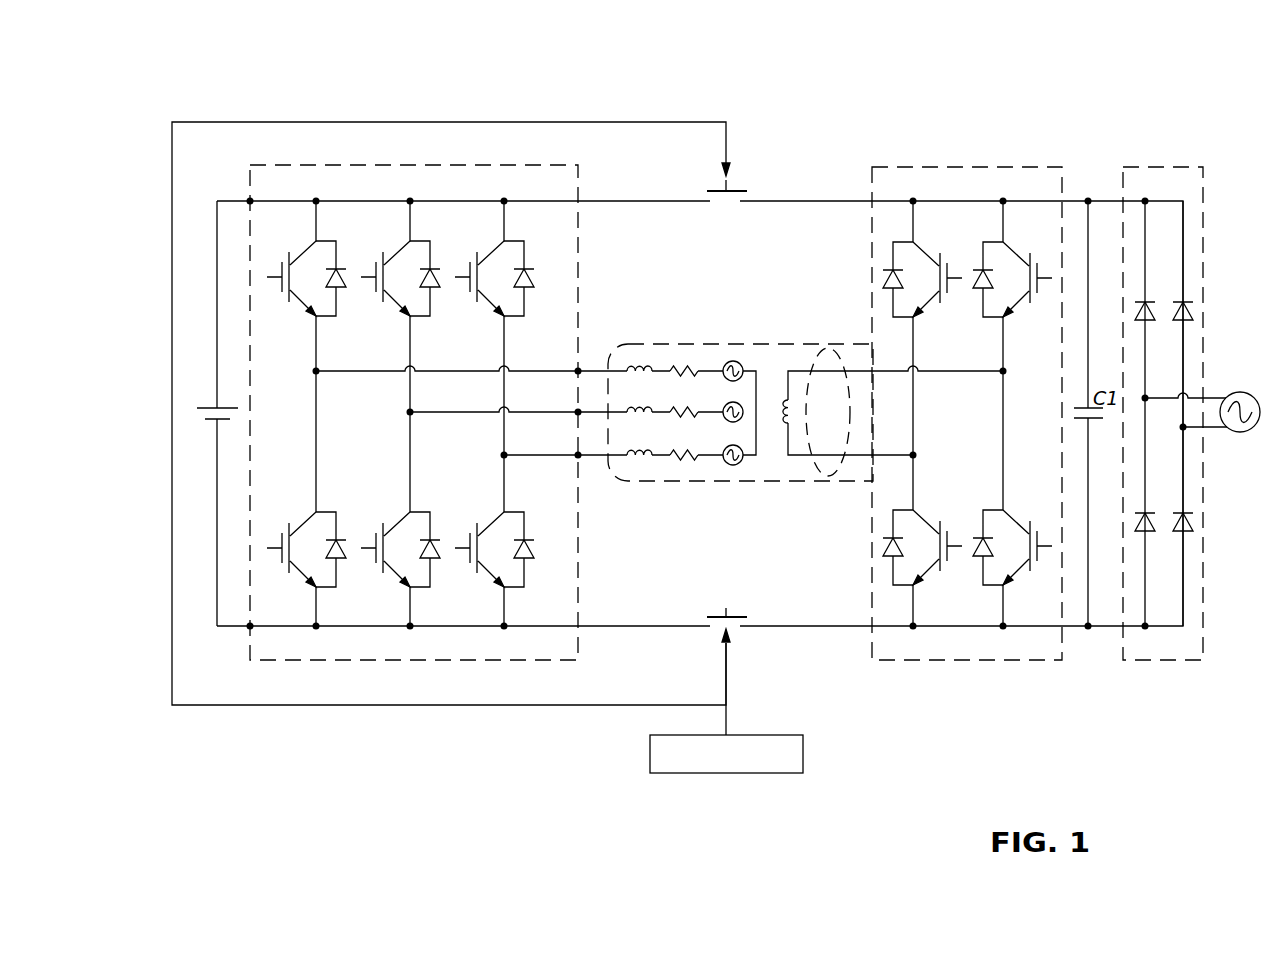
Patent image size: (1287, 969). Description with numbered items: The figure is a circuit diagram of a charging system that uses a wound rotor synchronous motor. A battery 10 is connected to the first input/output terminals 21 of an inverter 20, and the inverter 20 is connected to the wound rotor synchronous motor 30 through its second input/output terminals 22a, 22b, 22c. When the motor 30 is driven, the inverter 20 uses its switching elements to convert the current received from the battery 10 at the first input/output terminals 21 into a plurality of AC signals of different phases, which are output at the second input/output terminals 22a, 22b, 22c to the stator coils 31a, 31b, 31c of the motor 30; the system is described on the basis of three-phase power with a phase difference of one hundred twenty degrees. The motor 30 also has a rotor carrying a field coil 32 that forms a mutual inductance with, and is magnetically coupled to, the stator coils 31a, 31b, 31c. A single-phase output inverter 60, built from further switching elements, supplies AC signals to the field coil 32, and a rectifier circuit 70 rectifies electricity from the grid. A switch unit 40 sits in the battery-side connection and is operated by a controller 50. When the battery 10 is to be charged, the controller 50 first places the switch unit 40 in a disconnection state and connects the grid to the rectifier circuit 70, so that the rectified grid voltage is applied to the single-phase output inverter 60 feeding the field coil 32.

The battery 10 is at (210, 408).
The inverter 20 is at (403, 165).
The first input/output terminals 21 is at (250, 201).
The second input/output terminal 22a is at (578, 371).
The second input/output terminal 22b is at (578, 413).
The second input/output terminal 22c is at (578, 455).
The wound rotor synchronous motor 30 is at (773, 345).
The stator coil 31a is at (642, 365).
The stator coil 31b is at (632, 407).
The stator coil 31c is at (647, 457).
The field coil 32 is at (782, 423).
The switch unit 40 is at (737, 191).
The controller 50 is at (803, 752).
The single-phase output inverter 60 is at (950, 167).
The rectifier circuit 70 is at (1160, 167).